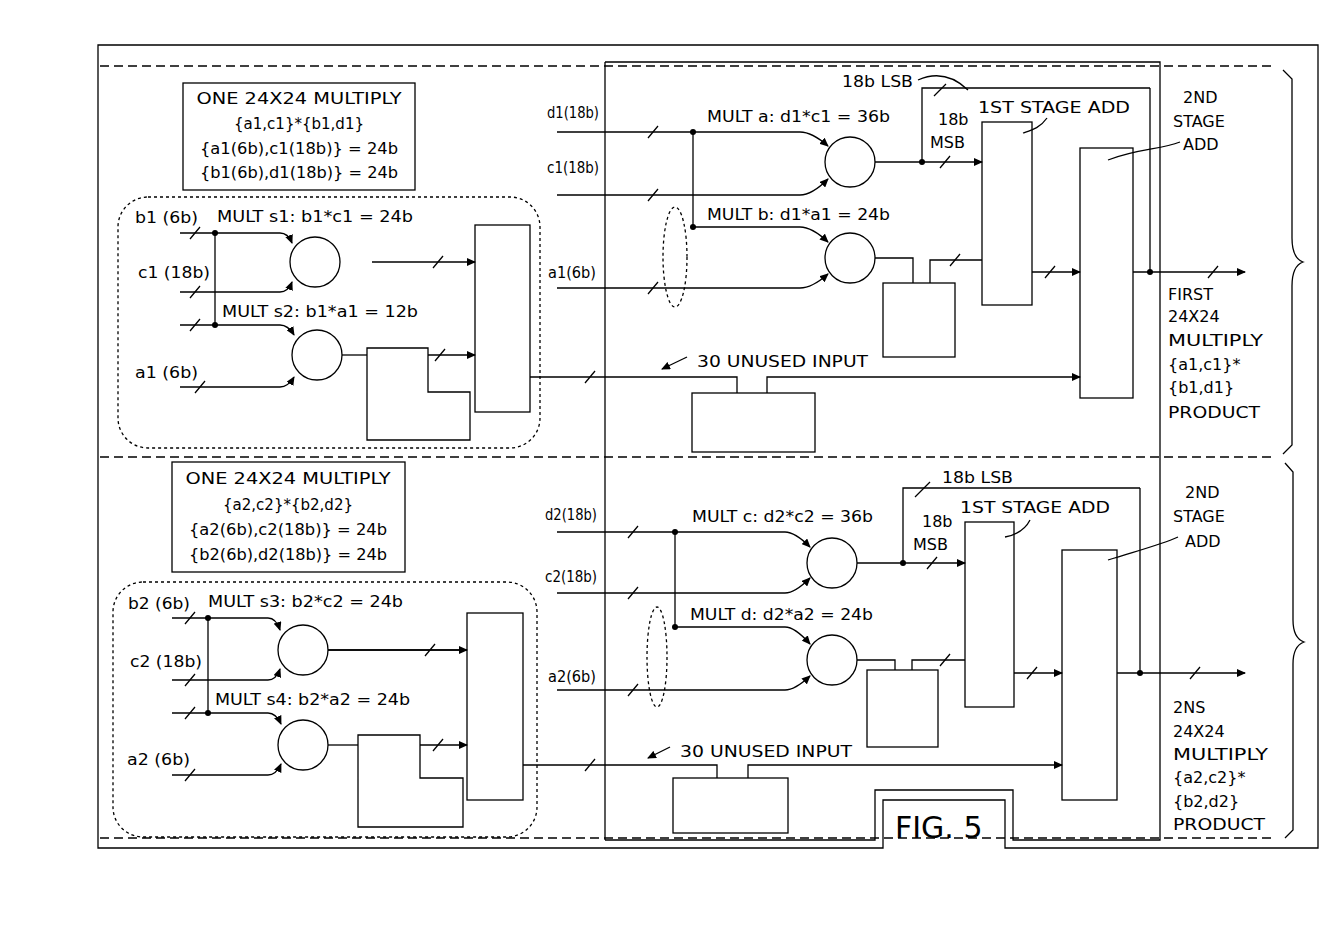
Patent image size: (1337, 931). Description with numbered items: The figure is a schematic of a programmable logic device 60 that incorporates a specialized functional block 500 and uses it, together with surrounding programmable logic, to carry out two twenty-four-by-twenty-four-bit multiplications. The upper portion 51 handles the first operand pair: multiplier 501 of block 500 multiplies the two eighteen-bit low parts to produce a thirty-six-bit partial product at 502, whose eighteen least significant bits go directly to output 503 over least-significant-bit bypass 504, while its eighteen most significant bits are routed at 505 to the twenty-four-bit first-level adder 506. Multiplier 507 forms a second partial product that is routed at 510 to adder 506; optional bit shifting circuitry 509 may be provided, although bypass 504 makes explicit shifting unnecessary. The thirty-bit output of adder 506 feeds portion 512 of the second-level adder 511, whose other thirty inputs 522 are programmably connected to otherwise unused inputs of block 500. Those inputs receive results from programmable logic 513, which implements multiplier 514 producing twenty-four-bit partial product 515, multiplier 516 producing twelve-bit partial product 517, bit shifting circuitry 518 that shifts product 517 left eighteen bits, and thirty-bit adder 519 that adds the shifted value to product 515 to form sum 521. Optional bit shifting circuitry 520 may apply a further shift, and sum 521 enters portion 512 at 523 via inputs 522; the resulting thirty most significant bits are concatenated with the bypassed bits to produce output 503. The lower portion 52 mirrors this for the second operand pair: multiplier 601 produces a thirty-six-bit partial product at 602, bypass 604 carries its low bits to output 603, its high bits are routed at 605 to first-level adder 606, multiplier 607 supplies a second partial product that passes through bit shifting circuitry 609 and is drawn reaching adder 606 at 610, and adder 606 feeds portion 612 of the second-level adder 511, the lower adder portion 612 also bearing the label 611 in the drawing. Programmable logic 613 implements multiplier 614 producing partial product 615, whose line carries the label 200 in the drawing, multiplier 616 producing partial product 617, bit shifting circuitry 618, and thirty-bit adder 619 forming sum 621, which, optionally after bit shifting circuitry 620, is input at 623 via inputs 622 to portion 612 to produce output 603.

The programmable logic device 60 is at (178, 46).
The specialized functional block 500 is at (852, 50).
The upper portion 51 is at (1302, 262).
The lower portion 52 is at (1303, 642).
The multiplier 501 is at (826, 163).
The 36-bit partial product 502 is at (890, 166).
The output 503 is at (1167, 272).
The least-significant-bit bypass 504 is at (1150, 183).
The most-significant-bit routing 505 is at (921, 158).
The 24-bit first-level adder 506 is at (1032, 148).
The multiplier 507 is at (826, 258).
The bit shifting circuitry 509 is at (958, 350).
The partial product routing 510 is at (971, 263).
The second-level adder 511 is at (1136, 388).
The adder portion 512 is at (1113, 399).
The programmable logic 513 is at (445, 197).
The multiplier 514 is at (291, 264).
The 24-bit partial product 515 is at (443, 268).
The multiplier 516 is at (293, 356).
The 12-bit partial product 517 is at (446, 362).
The bit shifting circuitry 518 is at (367, 420).
The 30-bit adder 519 is at (490, 225).
The bit shifting circuitry 520 is at (815, 440).
The sum 521 is at (538, 346).
The inputs 522 is at (768, 382).
The shifted sum input 523 is at (603, 383).
The multiplier 601 is at (808, 563).
The 36-bit partial product 602 is at (872, 566).
The output 603 is at (1172, 673).
The least-significant-bit bypass 604 is at (1140, 590).
The most-significant-bit routing 605 is at (904, 558).
The 24-bit first-level adder 606 is at (1014, 548).
The multiplier 607 is at (808, 658).
The bit shifting circuitry 609 is at (938, 745).
The 24-bit shifted input 610 is at (951, 665).
The second stage adder (30b) 611 is at (1089, 675).
The adder portion 612 is at (1095, 800).
The programmable logic 613 is at (442, 582).
The multiplier 614 is at (279, 652).
The 24-bit partial product 615 is at (435, 652).
The multiplier 616 is at (279, 746).
The 12-bit partial product 617 is at (442, 746).
The bit shifting circuitry 618 is at (358, 806).
The 30-bit adder 619 is at (488, 613).
The bit shifting circuitry 620 is at (788, 820).
The sum 621 is at (540, 742).
The inputs 622 is at (750, 770).
The shifted sum input 623 is at (604, 770).
The multiplier output bus 200 is at (397, 637).